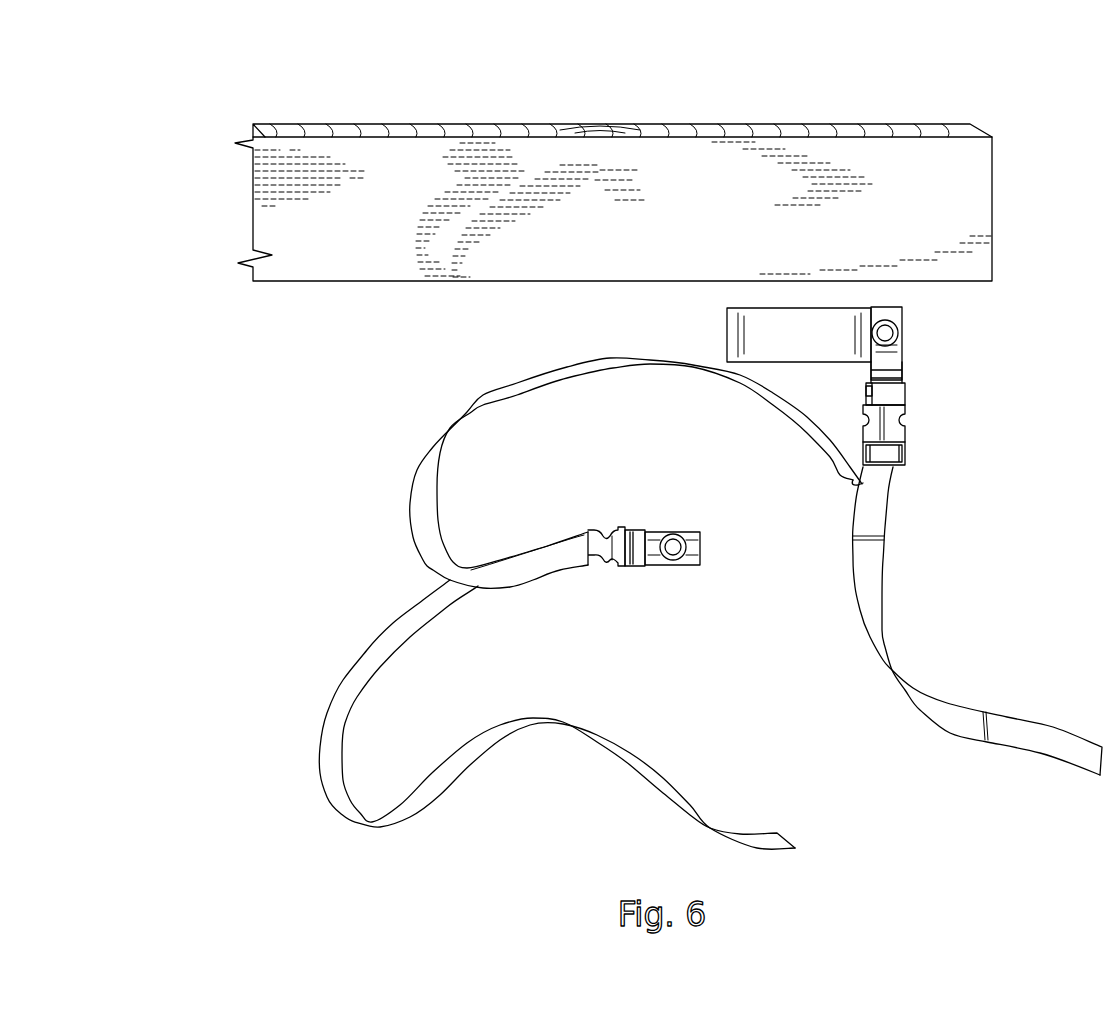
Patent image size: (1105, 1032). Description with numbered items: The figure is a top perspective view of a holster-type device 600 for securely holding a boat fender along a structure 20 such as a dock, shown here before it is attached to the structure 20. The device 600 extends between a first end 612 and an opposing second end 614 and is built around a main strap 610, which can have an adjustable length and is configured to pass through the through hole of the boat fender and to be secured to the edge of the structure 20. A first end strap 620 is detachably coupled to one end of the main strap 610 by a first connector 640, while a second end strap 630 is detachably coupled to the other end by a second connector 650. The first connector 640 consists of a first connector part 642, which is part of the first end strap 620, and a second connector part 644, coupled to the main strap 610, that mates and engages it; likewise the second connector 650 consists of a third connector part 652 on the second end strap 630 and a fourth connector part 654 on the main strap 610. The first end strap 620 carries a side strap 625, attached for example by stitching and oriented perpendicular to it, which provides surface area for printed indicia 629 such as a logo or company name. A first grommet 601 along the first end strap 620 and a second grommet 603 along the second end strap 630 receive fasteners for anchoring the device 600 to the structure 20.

The structure 20 is at (860, 155).
The device 600 is at (948, 496).
The first grommet 601 is at (886, 320).
The second grommet 603 is at (680, 540).
The main strap 610 is at (572, 373).
The first end 612 is at (961, 288).
The second end 614 is at (721, 535).
The first end strap 620 is at (890, 366).
The side strap 625 is at (721, 285).
The indicia 629 is at (757, 340).
The second end strap 630 is at (636, 550).
The first connector 640 is at (908, 413).
The first connector part 642 is at (868, 395).
The second connector part 644 is at (900, 443).
The second connector 650 is at (627, 519).
The third connector part 652 is at (648, 531).
The fourth connector part 654 is at (593, 531).